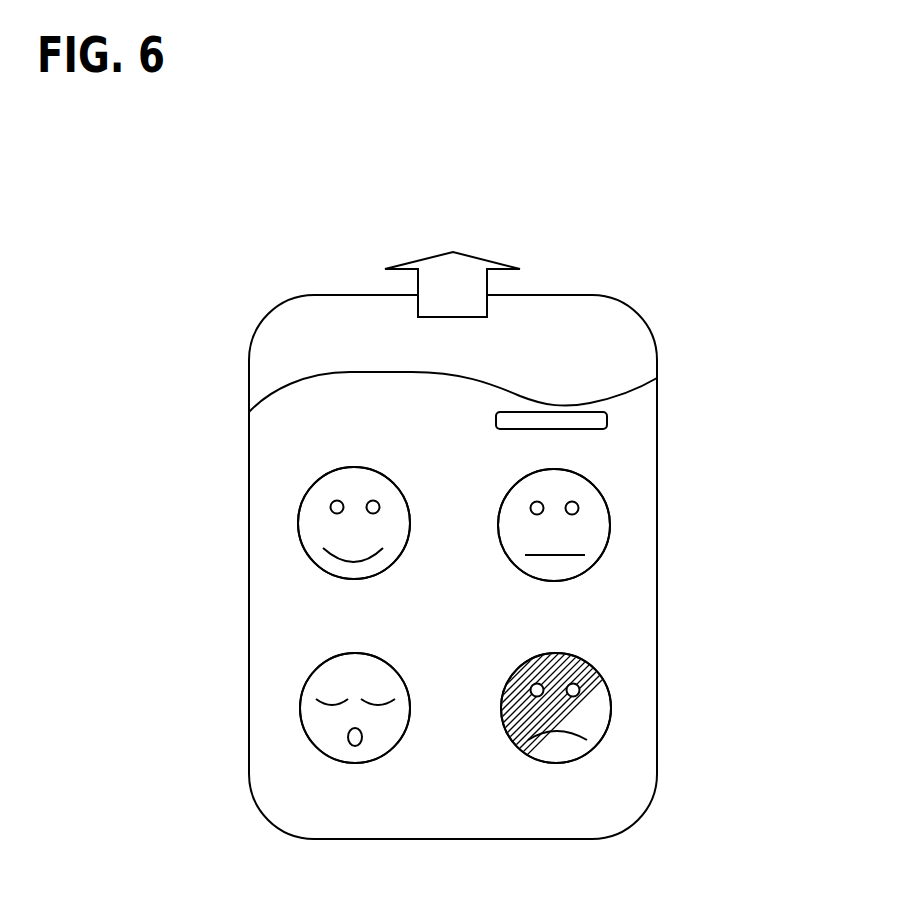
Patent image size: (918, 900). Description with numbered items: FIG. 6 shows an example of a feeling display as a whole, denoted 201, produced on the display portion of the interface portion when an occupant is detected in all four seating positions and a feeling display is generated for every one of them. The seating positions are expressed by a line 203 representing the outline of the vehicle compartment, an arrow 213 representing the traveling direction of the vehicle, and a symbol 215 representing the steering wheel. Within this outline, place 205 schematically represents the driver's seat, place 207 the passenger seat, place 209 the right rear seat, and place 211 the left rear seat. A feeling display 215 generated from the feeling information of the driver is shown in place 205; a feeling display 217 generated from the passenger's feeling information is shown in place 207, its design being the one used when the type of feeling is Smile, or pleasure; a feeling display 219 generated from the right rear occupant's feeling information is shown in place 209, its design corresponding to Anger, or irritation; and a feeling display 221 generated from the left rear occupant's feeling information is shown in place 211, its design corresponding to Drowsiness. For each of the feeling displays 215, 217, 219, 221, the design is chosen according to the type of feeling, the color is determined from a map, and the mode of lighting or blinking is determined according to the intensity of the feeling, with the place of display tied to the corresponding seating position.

The measuring device 201 is at (713, 258).
The line representing the outline of the vehicle compartment 203 is at (657, 460).
The place representing the driver's seat 205 is at (590, 474).
The place representing the passenger seat 207 is at (303, 490).
The place representing the right rear seat 209 is at (612, 693).
The place representing the left rear seat 211 is at (308, 750).
The arrow representing the traveling direction of the vehicle 213 is at (483, 257).
The feeling display 215 is at (607, 421).
The feeling display 217 is at (322, 572).
The feeling display 219 is at (592, 752).
The feeling display 221 is at (303, 695).